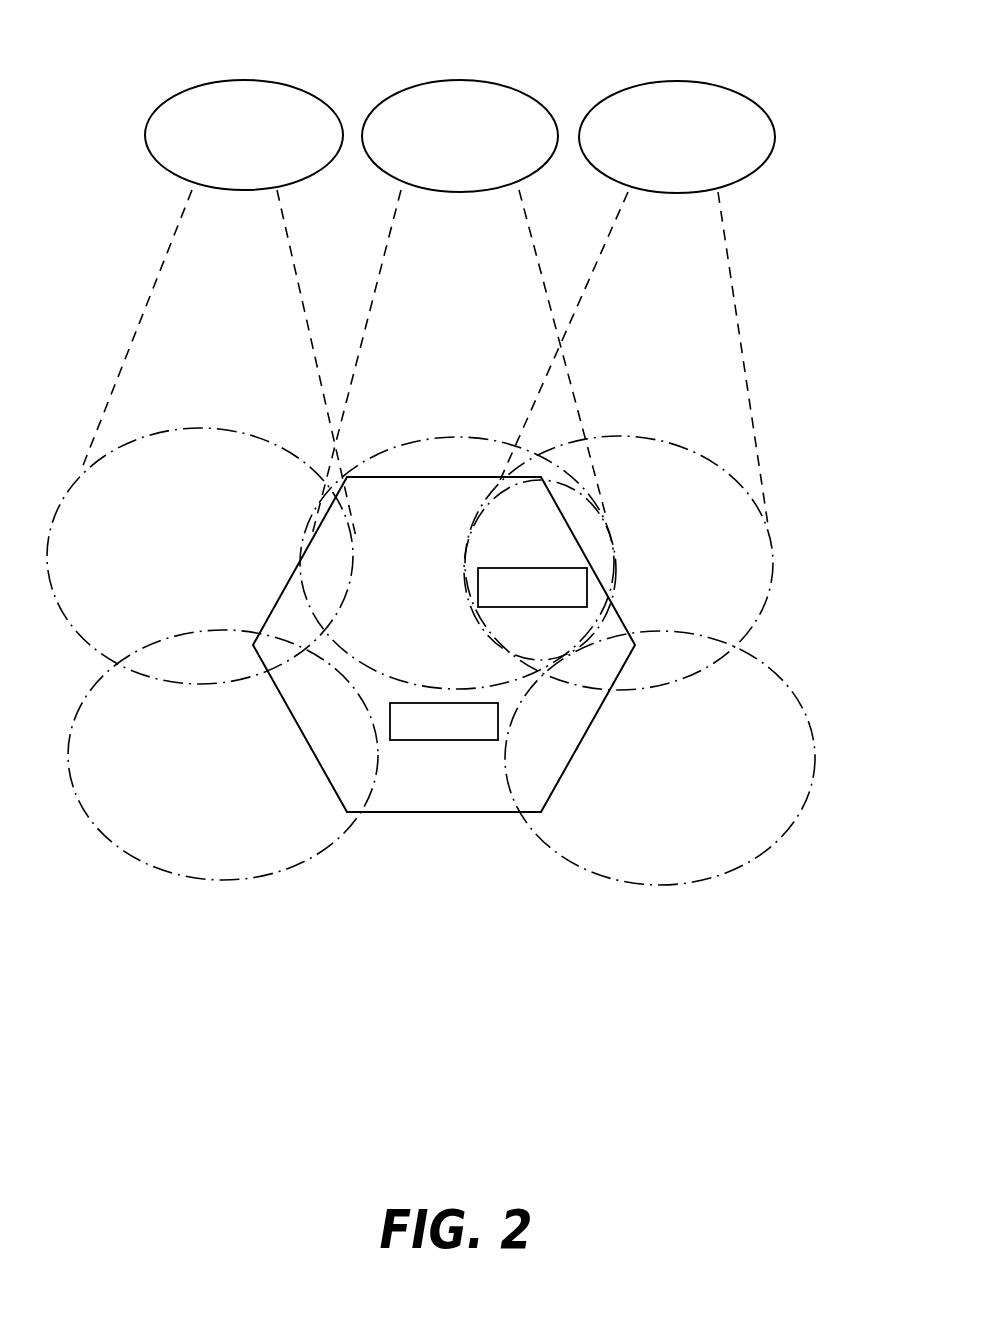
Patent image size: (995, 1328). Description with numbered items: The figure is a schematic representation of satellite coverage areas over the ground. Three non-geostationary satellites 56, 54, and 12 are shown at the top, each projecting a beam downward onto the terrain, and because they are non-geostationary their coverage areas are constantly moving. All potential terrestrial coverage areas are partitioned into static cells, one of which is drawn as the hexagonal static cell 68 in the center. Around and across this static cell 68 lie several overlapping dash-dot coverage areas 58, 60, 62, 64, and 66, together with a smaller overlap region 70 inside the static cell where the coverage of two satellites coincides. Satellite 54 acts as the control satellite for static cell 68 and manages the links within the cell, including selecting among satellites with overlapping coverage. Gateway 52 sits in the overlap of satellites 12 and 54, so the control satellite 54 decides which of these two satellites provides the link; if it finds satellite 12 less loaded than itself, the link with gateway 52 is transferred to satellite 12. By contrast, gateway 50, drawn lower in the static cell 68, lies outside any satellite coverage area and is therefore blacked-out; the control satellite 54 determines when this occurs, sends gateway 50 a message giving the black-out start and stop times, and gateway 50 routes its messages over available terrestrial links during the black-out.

The satellite 12 is at (695, 82).
The control satellite 54 is at (475, 80).
The satellite 56 is at (265, 79).
The satellite beam cell 58 is at (200, 427).
The satellite beam cell 60 is at (457, 437).
The satellite beam cell 62 is at (772, 537).
The satellite beam cell 64 is at (295, 867).
The satellite beam cell 66 is at (768, 670).
The small beam cell 70 is at (577, 482).
The static cell 68 is at (485, 812).
The gateway 50 is at (498, 712).
The gateway 52 is at (572, 567).